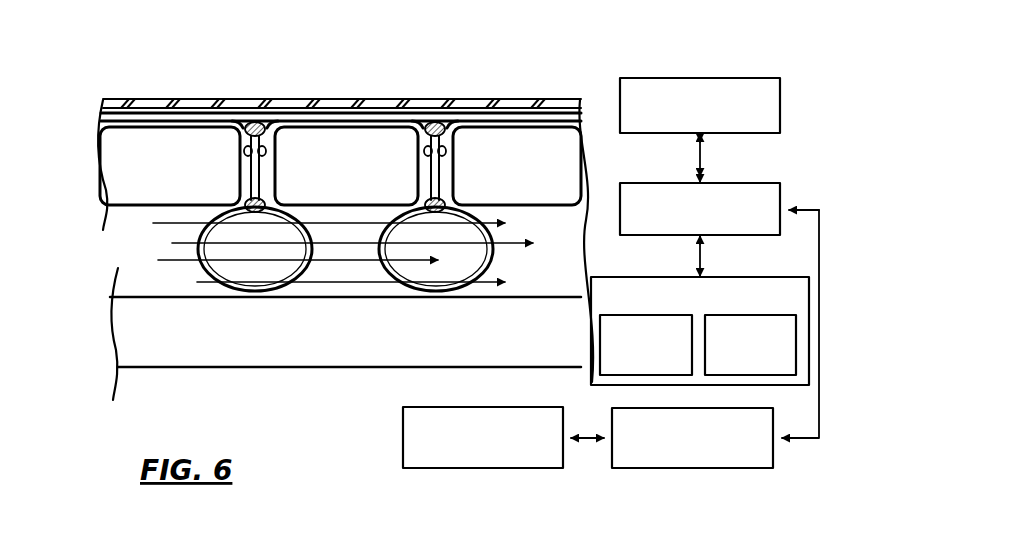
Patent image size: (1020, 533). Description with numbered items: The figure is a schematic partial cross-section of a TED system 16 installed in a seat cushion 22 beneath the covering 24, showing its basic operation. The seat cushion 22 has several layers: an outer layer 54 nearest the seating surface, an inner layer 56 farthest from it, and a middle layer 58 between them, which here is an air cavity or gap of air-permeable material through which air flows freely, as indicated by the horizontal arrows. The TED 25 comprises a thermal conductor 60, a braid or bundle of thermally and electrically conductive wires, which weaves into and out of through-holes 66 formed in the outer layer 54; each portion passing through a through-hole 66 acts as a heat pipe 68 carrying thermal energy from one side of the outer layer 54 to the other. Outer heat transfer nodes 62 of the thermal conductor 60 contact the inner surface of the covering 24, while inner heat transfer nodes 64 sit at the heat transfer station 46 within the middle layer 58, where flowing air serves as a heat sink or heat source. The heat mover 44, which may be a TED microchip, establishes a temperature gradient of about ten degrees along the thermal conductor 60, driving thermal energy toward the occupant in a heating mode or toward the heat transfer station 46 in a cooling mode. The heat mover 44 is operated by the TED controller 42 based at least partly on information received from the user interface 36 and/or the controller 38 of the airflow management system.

The TED system 16 is at (706, 66).
The seat cushion 22 is at (88, 132).
The covering 24 is at (213, 113).
The TED 25 is at (285, 108).
The user interface 36 is at (452, 470).
The controller 38 is at (483, 437).
The TED controller 42 is at (670, 470).
The heat mover 44 is at (440, 173).
The heat transfer station 46 is at (546, 252).
The outer layer 54 is at (167, 143).
The inner layer 56 is at (203, 360).
The middle layer 58 is at (140, 235).
The thermal conductor 60 is at (582, 118).
The outer heat transfer nodes 62 is at (490, 110).
The inner heat transfer nodes 64 is at (454, 287).
The through-holes 66 is at (232, 112).
The heat pipe 68 is at (264, 163).